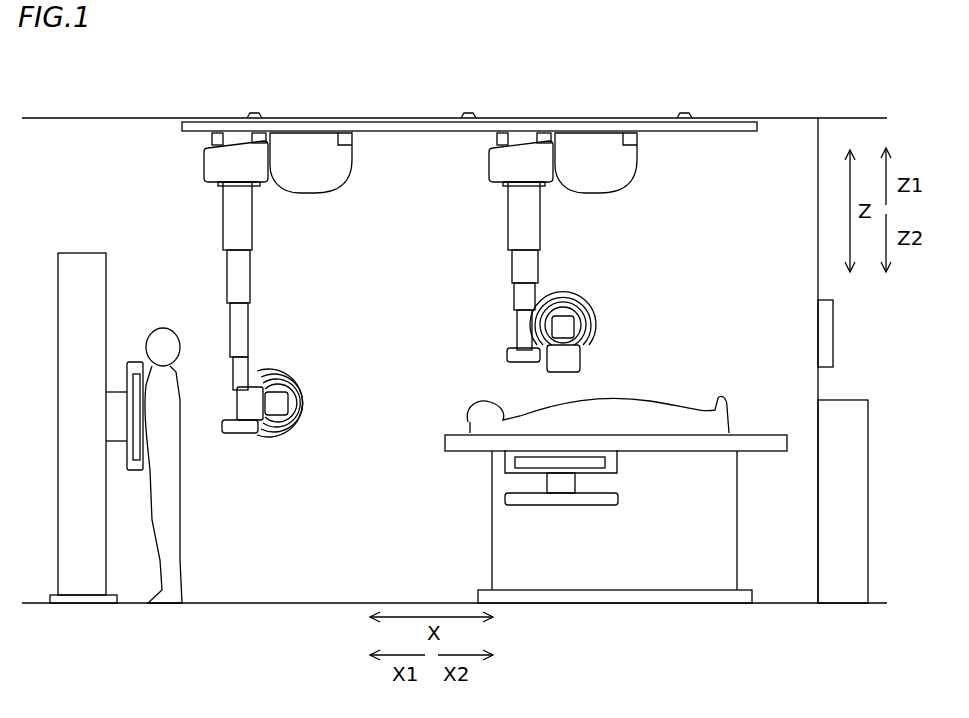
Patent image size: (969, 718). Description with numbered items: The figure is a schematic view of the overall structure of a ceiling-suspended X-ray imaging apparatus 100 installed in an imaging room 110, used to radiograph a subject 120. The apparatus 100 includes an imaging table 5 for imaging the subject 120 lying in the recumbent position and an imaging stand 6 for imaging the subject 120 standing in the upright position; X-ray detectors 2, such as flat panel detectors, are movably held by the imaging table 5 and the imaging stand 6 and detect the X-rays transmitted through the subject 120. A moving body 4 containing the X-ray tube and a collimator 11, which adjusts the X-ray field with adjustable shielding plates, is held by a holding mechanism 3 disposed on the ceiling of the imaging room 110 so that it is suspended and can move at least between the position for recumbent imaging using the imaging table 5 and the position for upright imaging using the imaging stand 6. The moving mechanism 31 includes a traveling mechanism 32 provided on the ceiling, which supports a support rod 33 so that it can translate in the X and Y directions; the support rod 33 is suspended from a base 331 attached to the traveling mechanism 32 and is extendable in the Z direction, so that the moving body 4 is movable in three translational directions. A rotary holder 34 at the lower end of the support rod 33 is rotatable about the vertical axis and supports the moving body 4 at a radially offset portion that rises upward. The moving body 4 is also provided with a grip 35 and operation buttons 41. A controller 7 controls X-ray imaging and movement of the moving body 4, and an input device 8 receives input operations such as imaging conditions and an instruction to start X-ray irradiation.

The X-ray imaging apparatus 100 is at (725, 210).
The imaging room 110 is at (67, 138).
The subject 120 is at (160, 332).
The X-ray detectors 2 is at (127, 418).
The holding mechanism 3 is at (408, 113).
The moving body 4 is at (602, 325).
The imaging table 5 is at (467, 441).
The imaging stand 6 is at (58, 302).
The controller 7 is at (842, 458).
The input device 8 is at (838, 343).
The collimator 11 is at (586, 368).
The moving mechanism 31 is at (622, 232).
The traveling mechanism 32 is at (182, 126).
The support rod 33 is at (250, 294).
The base 331 is at (488, 160).
The rotary holder 34 is at (507, 355).
The grip 35 is at (586, 300).
The operation buttons 41 is at (562, 300).